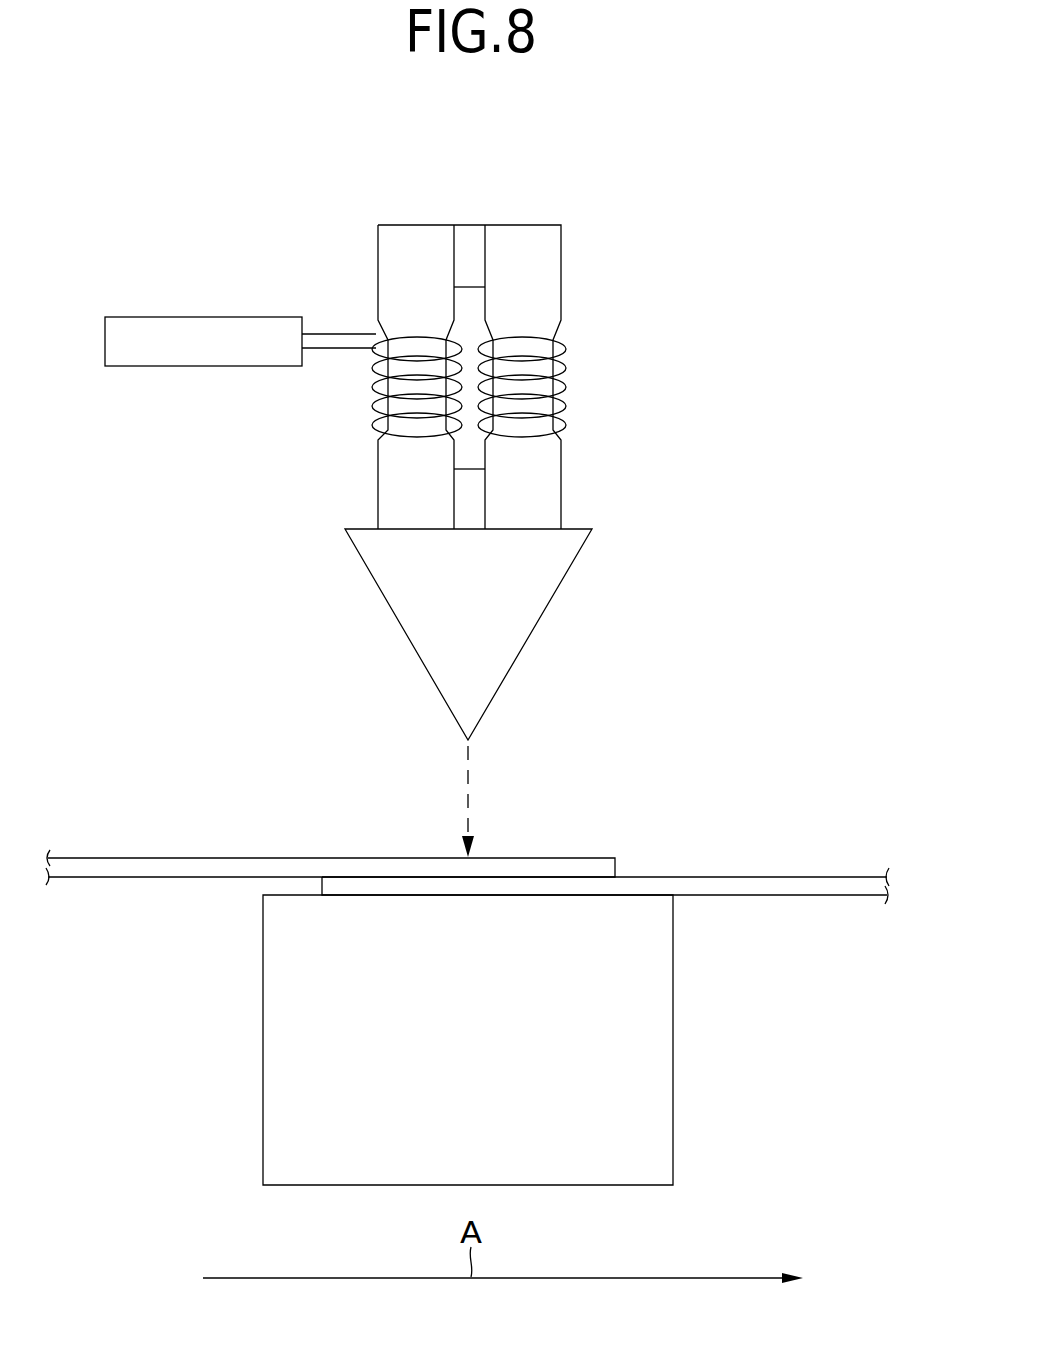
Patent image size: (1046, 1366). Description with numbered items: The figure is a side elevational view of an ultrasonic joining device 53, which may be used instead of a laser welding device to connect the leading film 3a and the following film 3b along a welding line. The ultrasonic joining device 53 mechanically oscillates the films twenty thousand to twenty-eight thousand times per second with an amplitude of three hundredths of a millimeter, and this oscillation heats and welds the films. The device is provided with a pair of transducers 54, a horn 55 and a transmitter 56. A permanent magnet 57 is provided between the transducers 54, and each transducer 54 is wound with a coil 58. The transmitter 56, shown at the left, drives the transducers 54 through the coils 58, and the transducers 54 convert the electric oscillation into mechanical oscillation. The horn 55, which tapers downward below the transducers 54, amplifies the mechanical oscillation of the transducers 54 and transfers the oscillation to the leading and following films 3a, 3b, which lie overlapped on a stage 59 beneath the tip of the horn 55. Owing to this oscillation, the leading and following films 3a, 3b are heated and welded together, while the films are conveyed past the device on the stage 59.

The ultrasonic joining device 53 is at (238, 216).
The transducers 54 is at (417, 230).
The horn 55 is at (521, 614).
The transmitter 56 is at (206, 317).
The permanent magnet 57 is at (470, 267).
The coil 58 is at (566, 378).
The stage 59 is at (650, 1087).
The leading film 3a is at (810, 887).
The following film 3b is at (158, 868).